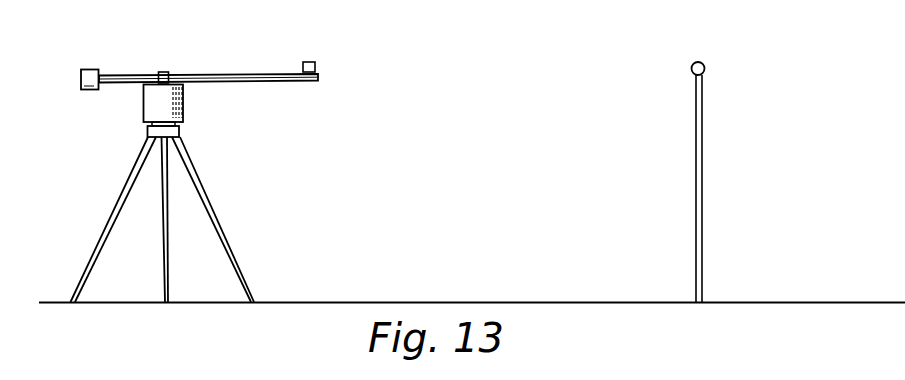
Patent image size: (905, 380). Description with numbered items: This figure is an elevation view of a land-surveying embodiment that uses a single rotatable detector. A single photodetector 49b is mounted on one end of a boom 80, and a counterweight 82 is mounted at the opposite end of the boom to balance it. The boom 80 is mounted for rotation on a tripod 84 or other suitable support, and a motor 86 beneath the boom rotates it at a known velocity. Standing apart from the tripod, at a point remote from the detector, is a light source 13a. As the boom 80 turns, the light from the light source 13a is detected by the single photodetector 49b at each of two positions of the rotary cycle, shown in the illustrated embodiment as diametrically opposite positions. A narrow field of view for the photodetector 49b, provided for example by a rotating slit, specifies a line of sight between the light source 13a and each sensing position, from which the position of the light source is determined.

The boom 80 is at (265, 83).
The counterweight 82 is at (87, 91).
The single photodetector 49b is at (313, 66).
The motor 86 is at (145, 113).
The tripod 84 is at (224, 196).
The light source 13a is at (703, 67).